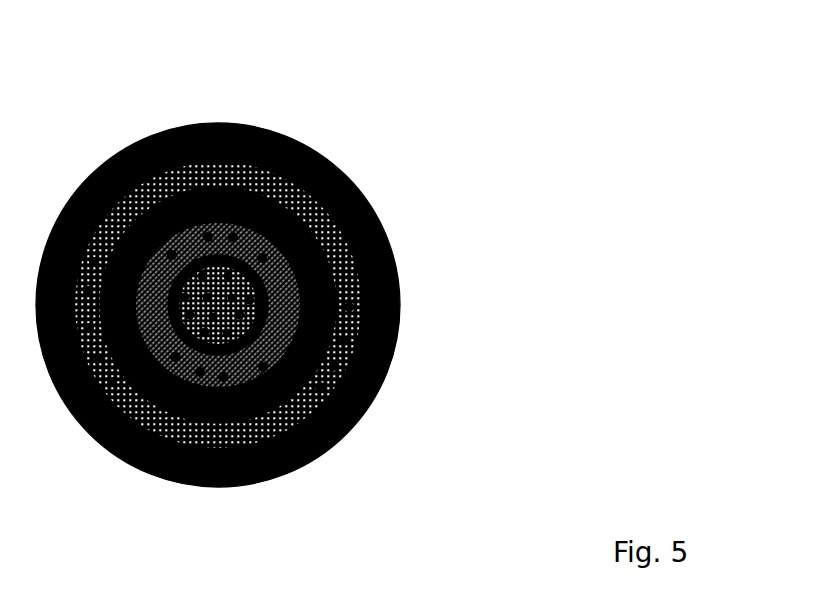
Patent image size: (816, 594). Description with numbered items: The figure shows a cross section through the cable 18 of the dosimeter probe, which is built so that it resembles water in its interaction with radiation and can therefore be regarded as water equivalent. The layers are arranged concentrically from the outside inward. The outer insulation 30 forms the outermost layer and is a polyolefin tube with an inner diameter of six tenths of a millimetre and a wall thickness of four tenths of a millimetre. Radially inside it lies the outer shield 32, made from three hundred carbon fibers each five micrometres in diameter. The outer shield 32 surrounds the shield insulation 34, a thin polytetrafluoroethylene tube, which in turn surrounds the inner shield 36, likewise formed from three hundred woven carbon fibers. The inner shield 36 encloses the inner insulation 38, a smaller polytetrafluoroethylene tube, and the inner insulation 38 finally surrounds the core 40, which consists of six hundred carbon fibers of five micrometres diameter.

The cable 18 is at (270, 250).
The outer insulation 30 is at (238, 142).
The outer shield 32 is at (273, 178).
The shield insulation 34 is at (290, 230).
The inner shield 36 is at (292, 282).
The inner insulation 38 is at (273, 315).
The core 40 is at (240, 330).